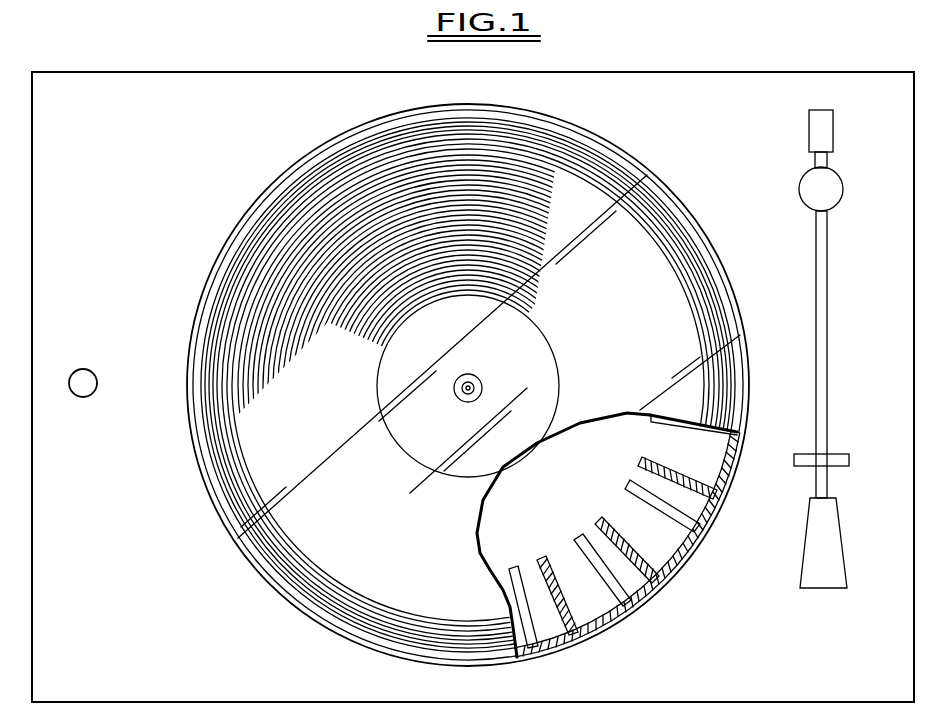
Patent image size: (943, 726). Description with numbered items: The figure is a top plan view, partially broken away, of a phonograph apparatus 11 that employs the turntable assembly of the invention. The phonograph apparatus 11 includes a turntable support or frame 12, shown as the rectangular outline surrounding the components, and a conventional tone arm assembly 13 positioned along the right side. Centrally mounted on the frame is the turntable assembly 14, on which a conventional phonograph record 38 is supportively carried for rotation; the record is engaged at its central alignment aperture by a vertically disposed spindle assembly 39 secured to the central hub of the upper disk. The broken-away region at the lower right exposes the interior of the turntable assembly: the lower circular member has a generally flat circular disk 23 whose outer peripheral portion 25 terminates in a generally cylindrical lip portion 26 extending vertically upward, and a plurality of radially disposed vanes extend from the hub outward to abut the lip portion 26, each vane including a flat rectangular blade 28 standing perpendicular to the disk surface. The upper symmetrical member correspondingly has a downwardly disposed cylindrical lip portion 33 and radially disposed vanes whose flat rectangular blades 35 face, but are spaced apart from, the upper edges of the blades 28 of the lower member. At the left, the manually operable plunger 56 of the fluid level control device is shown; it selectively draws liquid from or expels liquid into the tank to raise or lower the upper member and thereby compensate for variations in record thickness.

The phonograph apparatus 11 is at (165, 62).
The turntable support or frame 12 is at (252, 95).
The tone arm assembly 13 is at (837, 256).
The turntable assembly 14 is at (665, 173).
The circular disk 23 is at (674, 548).
The outer peripheral portion 25 is at (567, 492).
The cylindrical lip portion 26 is at (730, 456).
The rectangular blade 28 is at (575, 555).
The cylindrical lip portion 33 is at (651, 598).
The rectangular blade 35 is at (660, 480).
The phonograph record 38 is at (213, 371).
The spindle assembly 39 is at (510, 362).
The plunger 56 is at (86, 378).